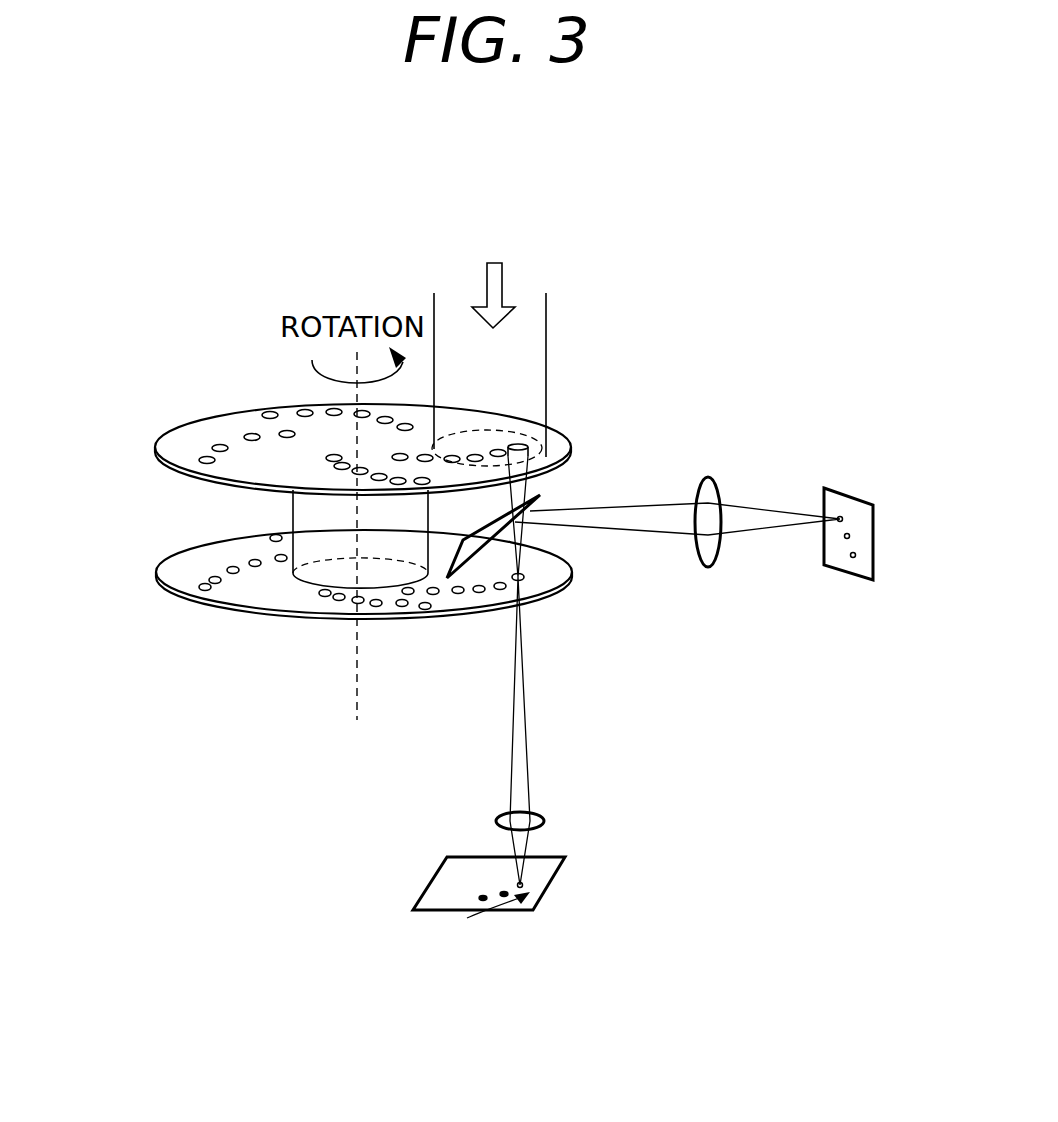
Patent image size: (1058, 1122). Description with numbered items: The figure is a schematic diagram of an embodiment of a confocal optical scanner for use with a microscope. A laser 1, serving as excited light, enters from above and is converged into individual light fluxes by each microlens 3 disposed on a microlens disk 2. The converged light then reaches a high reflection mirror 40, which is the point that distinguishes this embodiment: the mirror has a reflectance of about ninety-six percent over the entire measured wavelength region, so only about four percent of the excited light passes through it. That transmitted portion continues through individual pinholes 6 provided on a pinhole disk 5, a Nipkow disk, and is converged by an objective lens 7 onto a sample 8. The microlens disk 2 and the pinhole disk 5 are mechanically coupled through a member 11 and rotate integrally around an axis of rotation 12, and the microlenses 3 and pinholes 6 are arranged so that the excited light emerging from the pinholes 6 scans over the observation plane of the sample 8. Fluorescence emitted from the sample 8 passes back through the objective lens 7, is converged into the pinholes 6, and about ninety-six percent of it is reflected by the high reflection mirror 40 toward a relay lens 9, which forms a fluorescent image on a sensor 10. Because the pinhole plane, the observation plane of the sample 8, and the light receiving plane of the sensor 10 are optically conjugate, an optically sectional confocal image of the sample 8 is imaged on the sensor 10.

The laser 1 is at (503, 272).
The microlens disk 2 is at (218, 428).
The microlens 3 is at (525, 445).
The pinhole disk 5 is at (183, 572).
The pinhole 6 is at (524, 577).
The objective lens 7 is at (545, 816).
The sample 8 is at (557, 878).
The relay lens 9 is at (715, 556).
The sensor 10 is at (874, 520).
The member 11 is at (310, 510).
The axis of rotation 12 is at (358, 685).
The high reflection mirror 40 is at (540, 495).